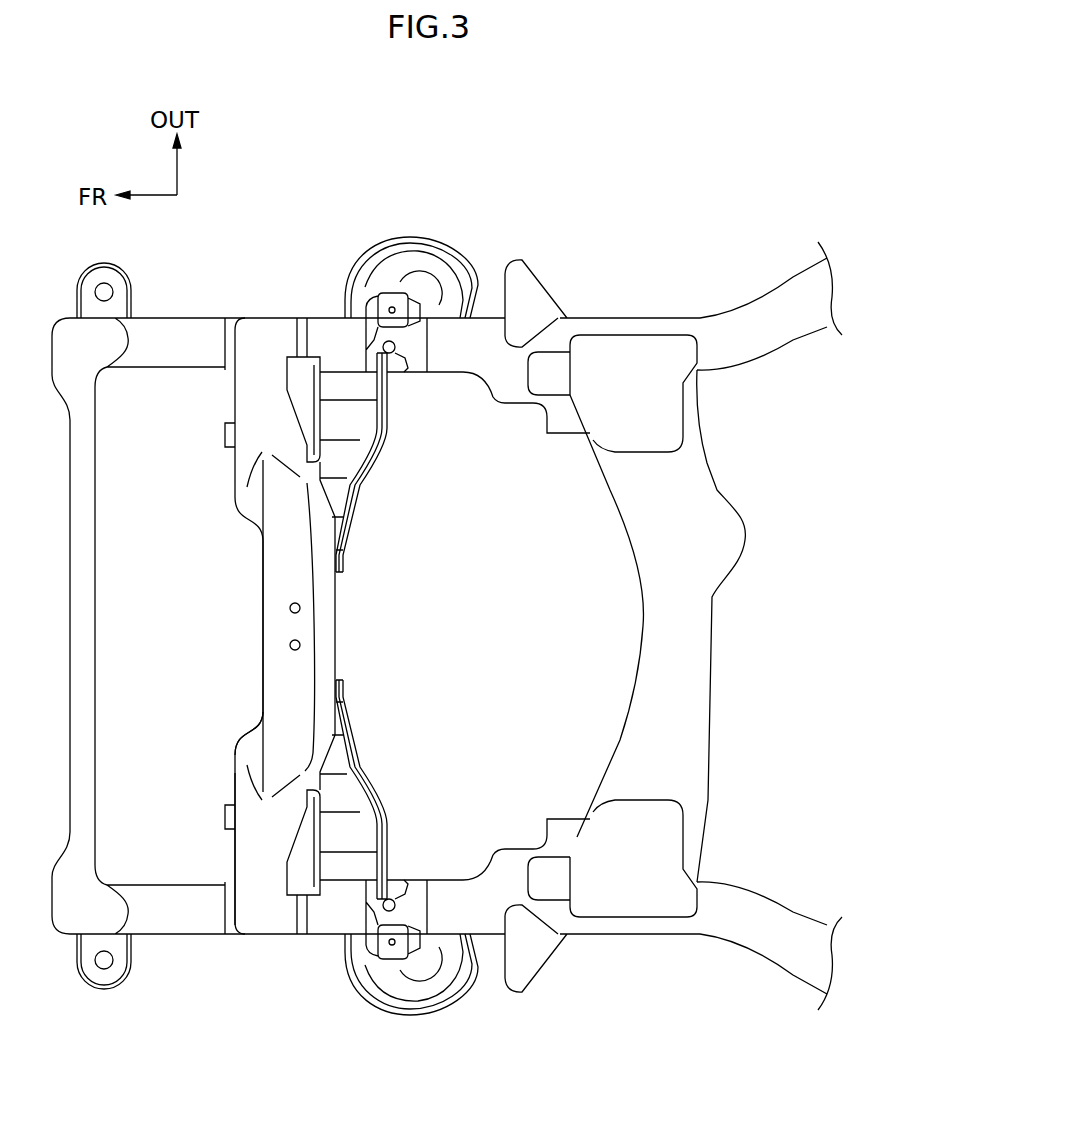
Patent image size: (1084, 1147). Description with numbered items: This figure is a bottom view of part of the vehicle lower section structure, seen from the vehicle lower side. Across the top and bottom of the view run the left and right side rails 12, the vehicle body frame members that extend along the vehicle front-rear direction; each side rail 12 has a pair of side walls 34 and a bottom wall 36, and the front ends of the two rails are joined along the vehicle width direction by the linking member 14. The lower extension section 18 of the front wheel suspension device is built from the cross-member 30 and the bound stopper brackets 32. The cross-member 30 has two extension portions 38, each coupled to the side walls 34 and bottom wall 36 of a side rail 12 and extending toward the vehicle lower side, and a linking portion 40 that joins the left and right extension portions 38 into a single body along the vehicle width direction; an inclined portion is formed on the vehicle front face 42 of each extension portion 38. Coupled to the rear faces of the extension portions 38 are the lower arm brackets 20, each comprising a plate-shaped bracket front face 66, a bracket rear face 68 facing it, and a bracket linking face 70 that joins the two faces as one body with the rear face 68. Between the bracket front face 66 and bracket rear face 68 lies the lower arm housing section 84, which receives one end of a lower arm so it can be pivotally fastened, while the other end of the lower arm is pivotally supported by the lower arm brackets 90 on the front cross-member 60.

The side rail 12 is at (602, 327).
The linking member 14 is at (87, 715).
The lower extension section 18 is at (192, 775).
The lower arm bracket 20 is at (388, 428).
The cross-member 30 is at (239, 756).
The bound stopper bracket 32 is at (423, 327).
The side wall 34 is at (470, 375).
The bottom wall 36 is at (717, 348).
The extension portion 38 is at (255, 330).
The linking portion 40 is at (270, 660).
The vehicle front face 42 is at (232, 383).
The front cross-member 60 is at (697, 728).
The bracket front face 66 is at (327, 370).
The bracket rear face 68 is at (389, 402).
The bracket linking face 70 is at (343, 387).
The lower arm housing section 84 is at (358, 432).
The lower arm bracket 90 is at (667, 427).